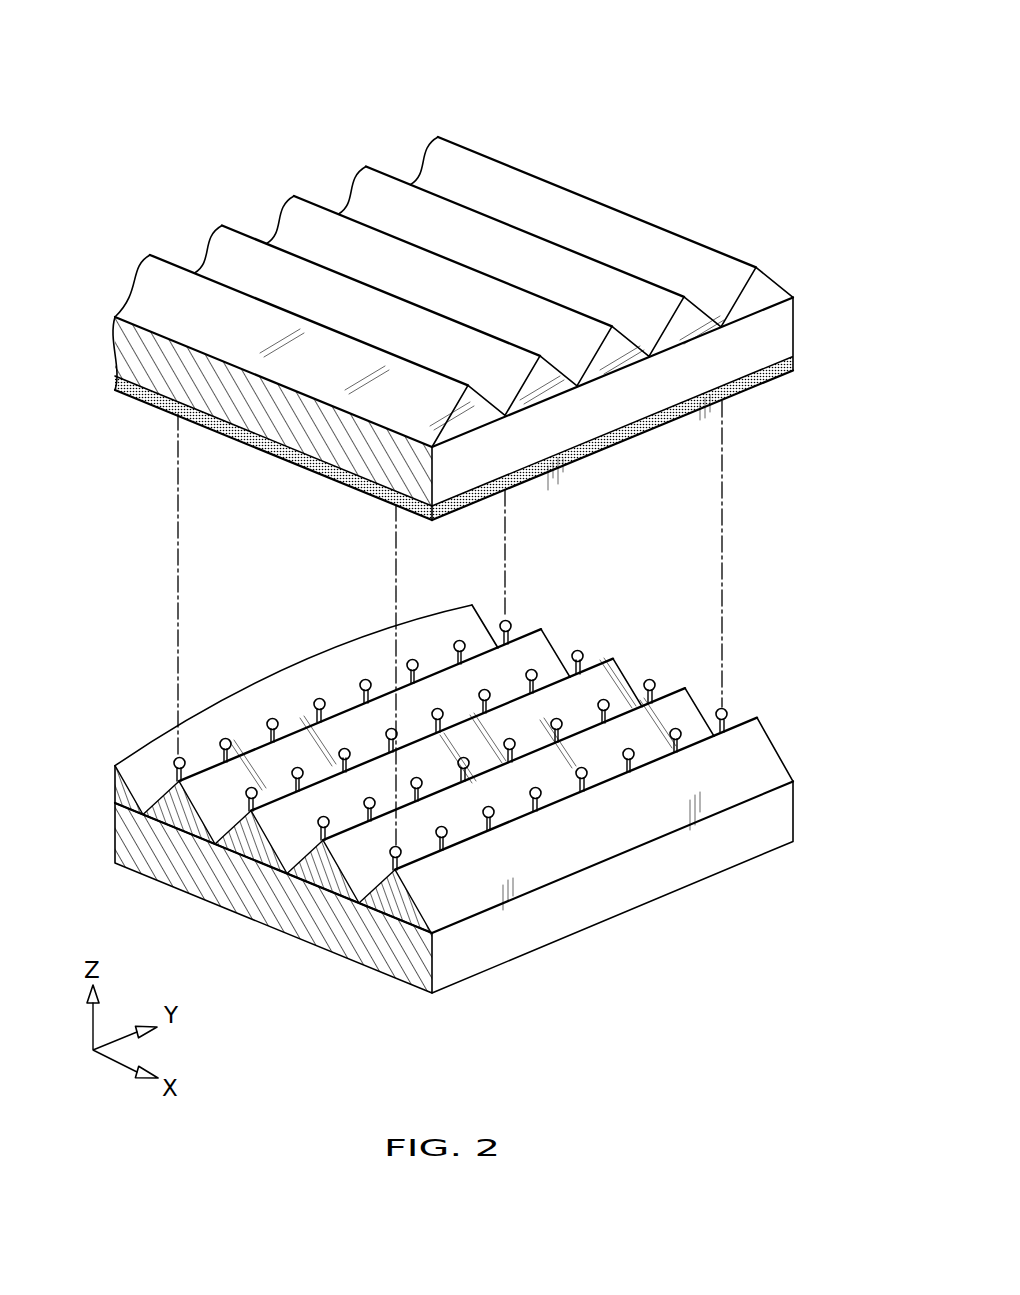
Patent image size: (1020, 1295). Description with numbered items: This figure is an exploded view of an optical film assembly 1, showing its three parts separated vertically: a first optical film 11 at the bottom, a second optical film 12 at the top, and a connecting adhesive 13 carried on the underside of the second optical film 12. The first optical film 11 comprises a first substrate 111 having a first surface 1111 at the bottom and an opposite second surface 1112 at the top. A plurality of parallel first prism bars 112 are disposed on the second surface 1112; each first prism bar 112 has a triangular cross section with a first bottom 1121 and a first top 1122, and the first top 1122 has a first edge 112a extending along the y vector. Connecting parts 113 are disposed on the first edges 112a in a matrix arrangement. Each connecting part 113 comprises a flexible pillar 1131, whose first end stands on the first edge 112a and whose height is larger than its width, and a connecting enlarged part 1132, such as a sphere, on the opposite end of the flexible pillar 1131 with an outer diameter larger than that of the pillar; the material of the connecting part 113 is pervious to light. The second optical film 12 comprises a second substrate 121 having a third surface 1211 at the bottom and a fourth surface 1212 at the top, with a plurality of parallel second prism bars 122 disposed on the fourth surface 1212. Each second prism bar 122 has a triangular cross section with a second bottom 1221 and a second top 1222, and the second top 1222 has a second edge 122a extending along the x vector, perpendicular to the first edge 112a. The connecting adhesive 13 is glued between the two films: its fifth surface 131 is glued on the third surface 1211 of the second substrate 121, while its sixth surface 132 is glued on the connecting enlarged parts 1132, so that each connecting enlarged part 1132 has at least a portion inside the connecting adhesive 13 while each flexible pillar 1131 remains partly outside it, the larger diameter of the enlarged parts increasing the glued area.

The optical film assembly 1 is at (721, 39).
The first optical film 11 is at (709, 902).
The first substrate 111 is at (573, 913).
The first surface 1111 is at (307, 943).
The first bottom 1121 is at (382, 922).
The first prism bar 112 is at (540, 862).
The first edge 112a is at (433, 670).
The second surface 1112 is at (417, 912).
The first top 1122 is at (400, 873).
The connecting part 113 is at (300, 692).
The flexible pillar 1131 is at (313, 725).
The connecting enlarged part 1132 is at (320, 700).
The second optical film 12 is at (630, 183).
The second substrate 121 is at (138, 355).
The third surface 1211 is at (762, 372).
The fourth surface 1212 is at (766, 303).
The second bottom 1221 is at (740, 320).
The second prism bar 122 is at (165, 297).
The second edge 122a is at (178, 262).
The second top 1222 is at (717, 247).
The connecting adhesive 13 is at (262, 448).
The fifth surface 131 is at (330, 448).
The sixth surface 132 is at (317, 460).